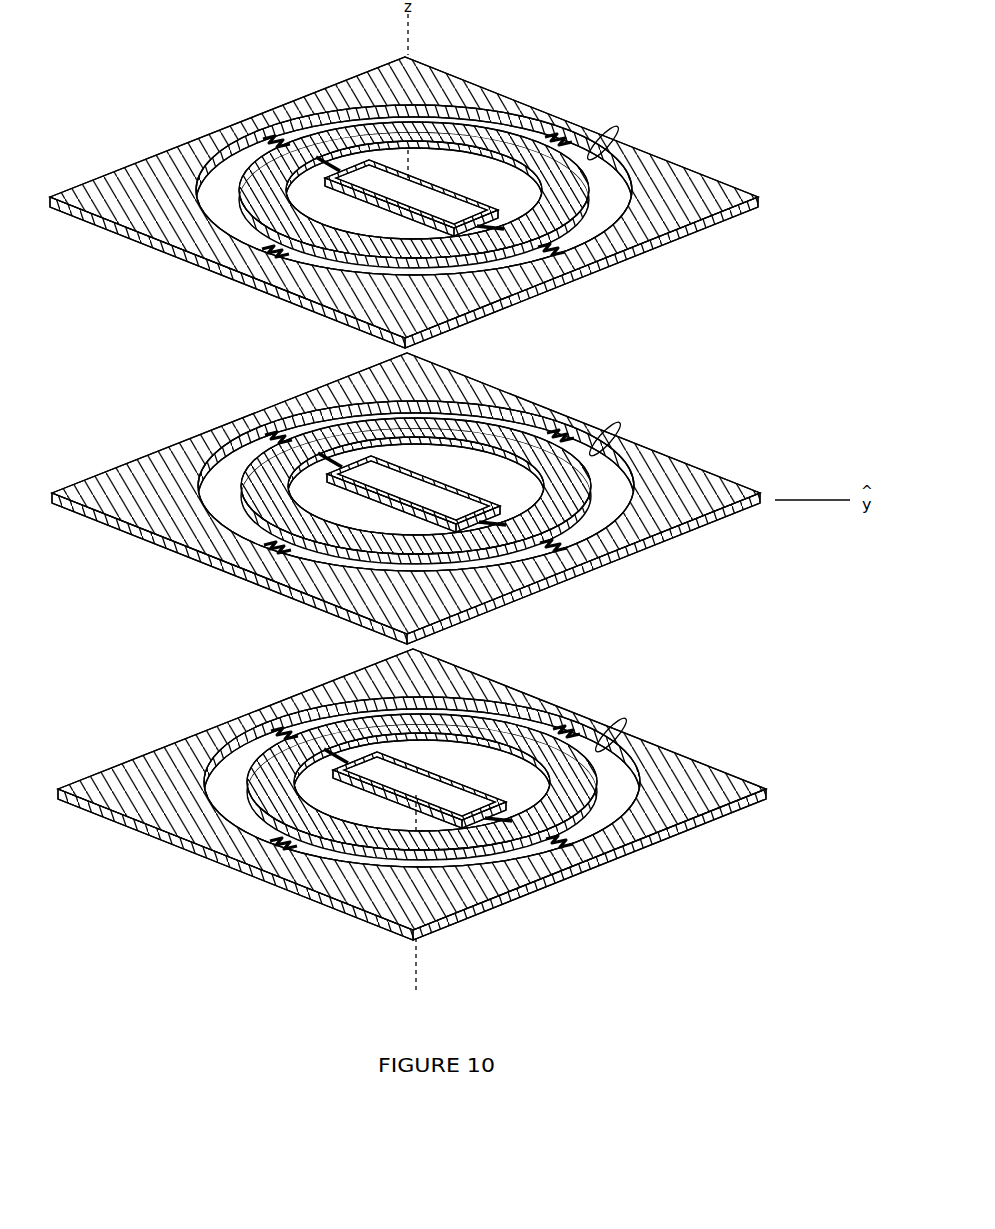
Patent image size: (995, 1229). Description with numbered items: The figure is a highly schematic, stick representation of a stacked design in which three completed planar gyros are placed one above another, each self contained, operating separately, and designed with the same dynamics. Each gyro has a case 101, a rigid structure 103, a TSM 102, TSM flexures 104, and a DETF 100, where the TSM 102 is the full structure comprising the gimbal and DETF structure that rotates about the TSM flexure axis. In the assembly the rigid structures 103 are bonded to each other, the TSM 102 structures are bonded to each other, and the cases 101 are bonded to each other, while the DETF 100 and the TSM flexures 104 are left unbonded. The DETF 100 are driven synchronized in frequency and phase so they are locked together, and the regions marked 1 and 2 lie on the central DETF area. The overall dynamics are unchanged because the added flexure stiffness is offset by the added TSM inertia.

The DETF 100 is at (478, 193).
The case 101 is at (692, 162).
The TSM 102 is at (257, 232).
The rigid structure 103 is at (500, 221).
The TSM flexure 104 is at (268, 141).
The first tine 1 is at (370, 513).
The second tine 2 is at (446, 469).